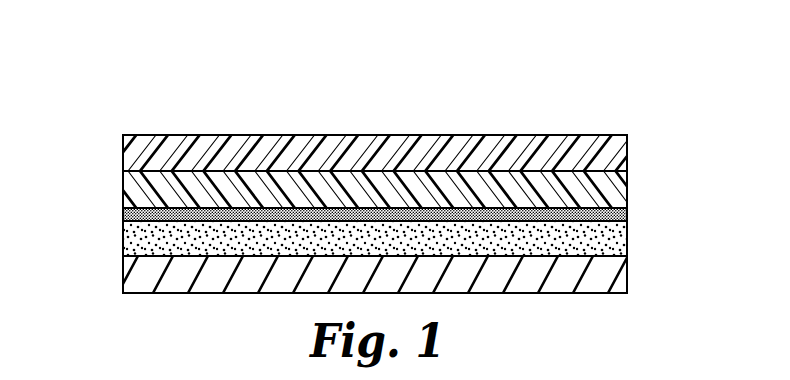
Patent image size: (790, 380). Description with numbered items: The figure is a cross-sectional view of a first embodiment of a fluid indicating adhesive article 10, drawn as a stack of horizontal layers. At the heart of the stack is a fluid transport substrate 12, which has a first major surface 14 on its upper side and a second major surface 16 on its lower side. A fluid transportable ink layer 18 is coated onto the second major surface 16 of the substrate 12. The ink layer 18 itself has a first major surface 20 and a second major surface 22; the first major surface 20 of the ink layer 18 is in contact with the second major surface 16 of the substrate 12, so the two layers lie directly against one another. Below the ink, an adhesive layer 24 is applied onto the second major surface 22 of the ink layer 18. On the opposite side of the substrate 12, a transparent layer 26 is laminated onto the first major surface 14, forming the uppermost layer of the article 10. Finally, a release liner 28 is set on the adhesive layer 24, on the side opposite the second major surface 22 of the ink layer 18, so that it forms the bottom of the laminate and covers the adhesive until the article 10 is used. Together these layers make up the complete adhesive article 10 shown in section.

The adhesive article 10 is at (621, 50).
The fluid transport substrate 12 is at (137, 186).
The first major surface 14 is at (610, 167).
The second major surface 16 is at (614, 210).
The fluid transportable ink layer 18 is at (123, 210).
The first major surface 20 is at (123, 197).
The second major surface 22 is at (123, 237).
The adhesive layer 24 is at (617, 241).
The transparent layer 26 is at (398, 148).
The release liner 28 is at (596, 284).